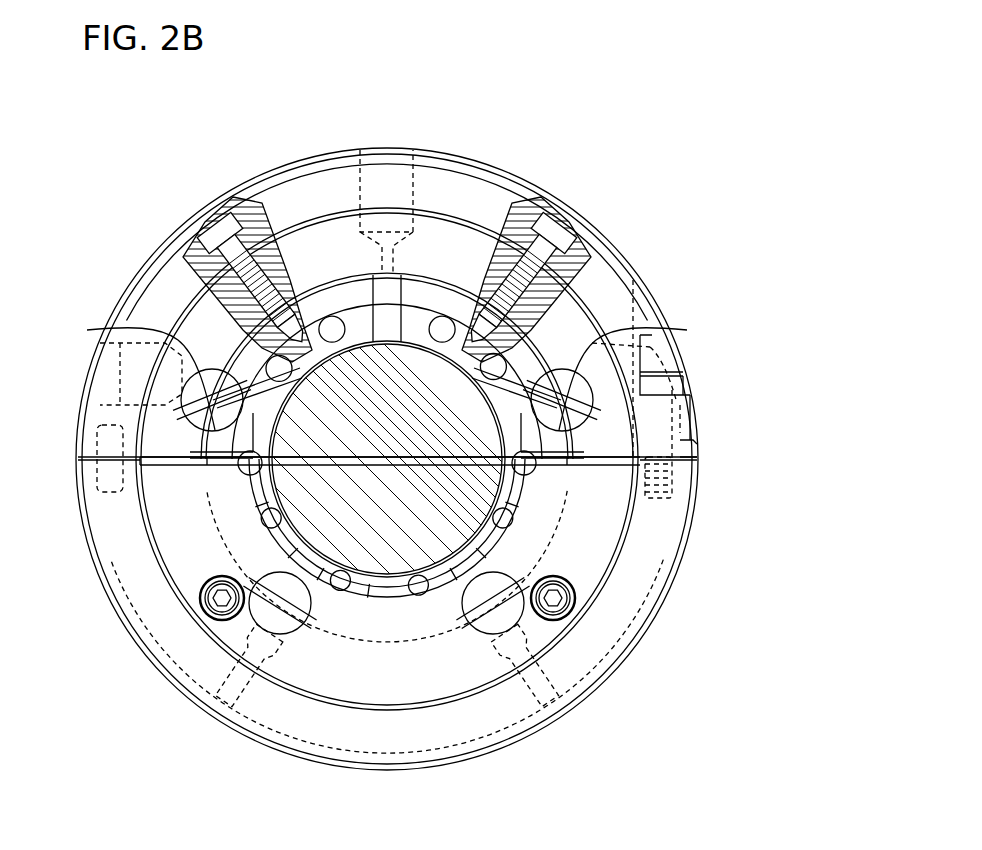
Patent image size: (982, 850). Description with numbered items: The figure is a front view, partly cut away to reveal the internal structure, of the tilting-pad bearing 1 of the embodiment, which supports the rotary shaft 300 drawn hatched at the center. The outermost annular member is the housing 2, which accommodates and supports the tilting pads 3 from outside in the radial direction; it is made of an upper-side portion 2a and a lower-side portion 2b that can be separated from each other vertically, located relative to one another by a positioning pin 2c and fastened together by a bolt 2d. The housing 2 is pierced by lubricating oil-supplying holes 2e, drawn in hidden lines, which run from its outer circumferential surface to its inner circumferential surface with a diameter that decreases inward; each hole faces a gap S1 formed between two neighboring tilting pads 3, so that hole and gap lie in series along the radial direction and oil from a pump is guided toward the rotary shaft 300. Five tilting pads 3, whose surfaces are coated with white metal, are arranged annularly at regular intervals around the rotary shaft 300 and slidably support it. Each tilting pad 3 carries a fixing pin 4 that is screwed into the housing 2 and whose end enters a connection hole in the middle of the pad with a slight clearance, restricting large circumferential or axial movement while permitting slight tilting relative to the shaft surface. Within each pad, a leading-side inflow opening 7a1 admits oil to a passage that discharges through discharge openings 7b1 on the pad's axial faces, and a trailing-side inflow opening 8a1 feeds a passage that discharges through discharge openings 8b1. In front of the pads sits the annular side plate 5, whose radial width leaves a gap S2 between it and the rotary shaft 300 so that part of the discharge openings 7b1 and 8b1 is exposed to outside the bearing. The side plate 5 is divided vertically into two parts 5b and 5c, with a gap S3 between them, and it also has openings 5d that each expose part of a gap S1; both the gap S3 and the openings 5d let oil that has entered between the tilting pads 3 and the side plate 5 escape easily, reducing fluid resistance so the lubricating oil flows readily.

The tilting-pad bearing 1 is at (646, 130).
The housing 2 is at (680, 593).
The upper-side portion 2a is at (697, 412).
The lower-side portion 2b is at (697, 505).
The positioning pin 2c is at (98, 440).
The bolt 2d is at (683, 440).
The lubricating oil-supplying hole 2e is at (412, 178).
The tilting pad 3 is at (352, 303).
The fixing pin 4 is at (232, 228).
The side plate 5 is at (158, 588).
The part of side plate 5b is at (197, 330).
The part of side plate 5c is at (168, 540).
The opening 5d is at (553, 397).
The leading-side inflow opening 7a1 is at (380, 325).
The discharge opening 7b1 is at (336, 338).
The trailing-side inflow opening 8a1 is at (394, 305).
The discharge opening 8b1 is at (290, 370).
The rotary shaft 300 is at (415, 478).
The gap S1 is at (387, 298).
The gap S2 is at (522, 503).
The gap S3 is at (160, 466).